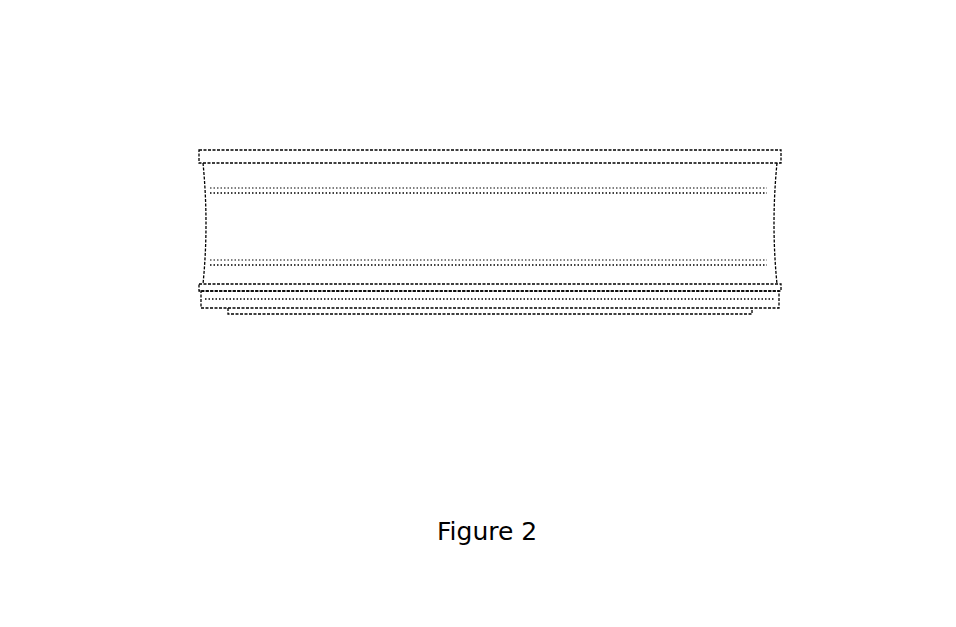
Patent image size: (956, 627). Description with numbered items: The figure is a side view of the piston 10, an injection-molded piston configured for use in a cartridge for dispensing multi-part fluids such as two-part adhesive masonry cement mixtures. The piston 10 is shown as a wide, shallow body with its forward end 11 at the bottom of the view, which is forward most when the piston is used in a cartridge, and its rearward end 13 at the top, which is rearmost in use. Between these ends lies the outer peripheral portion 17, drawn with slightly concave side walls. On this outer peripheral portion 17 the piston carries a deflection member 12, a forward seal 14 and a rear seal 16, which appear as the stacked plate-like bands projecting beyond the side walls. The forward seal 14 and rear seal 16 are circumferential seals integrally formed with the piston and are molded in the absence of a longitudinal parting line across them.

The piston 10 is at (145, 103).
The forward end 11 is at (484, 350).
The deflection member 12 is at (777, 306).
The rearward end 13 is at (484, 108).
The forward seal 14 is at (779, 290).
The rear seal 16 is at (779, 158).
The outer peripheral portion 17 is at (168, 231).